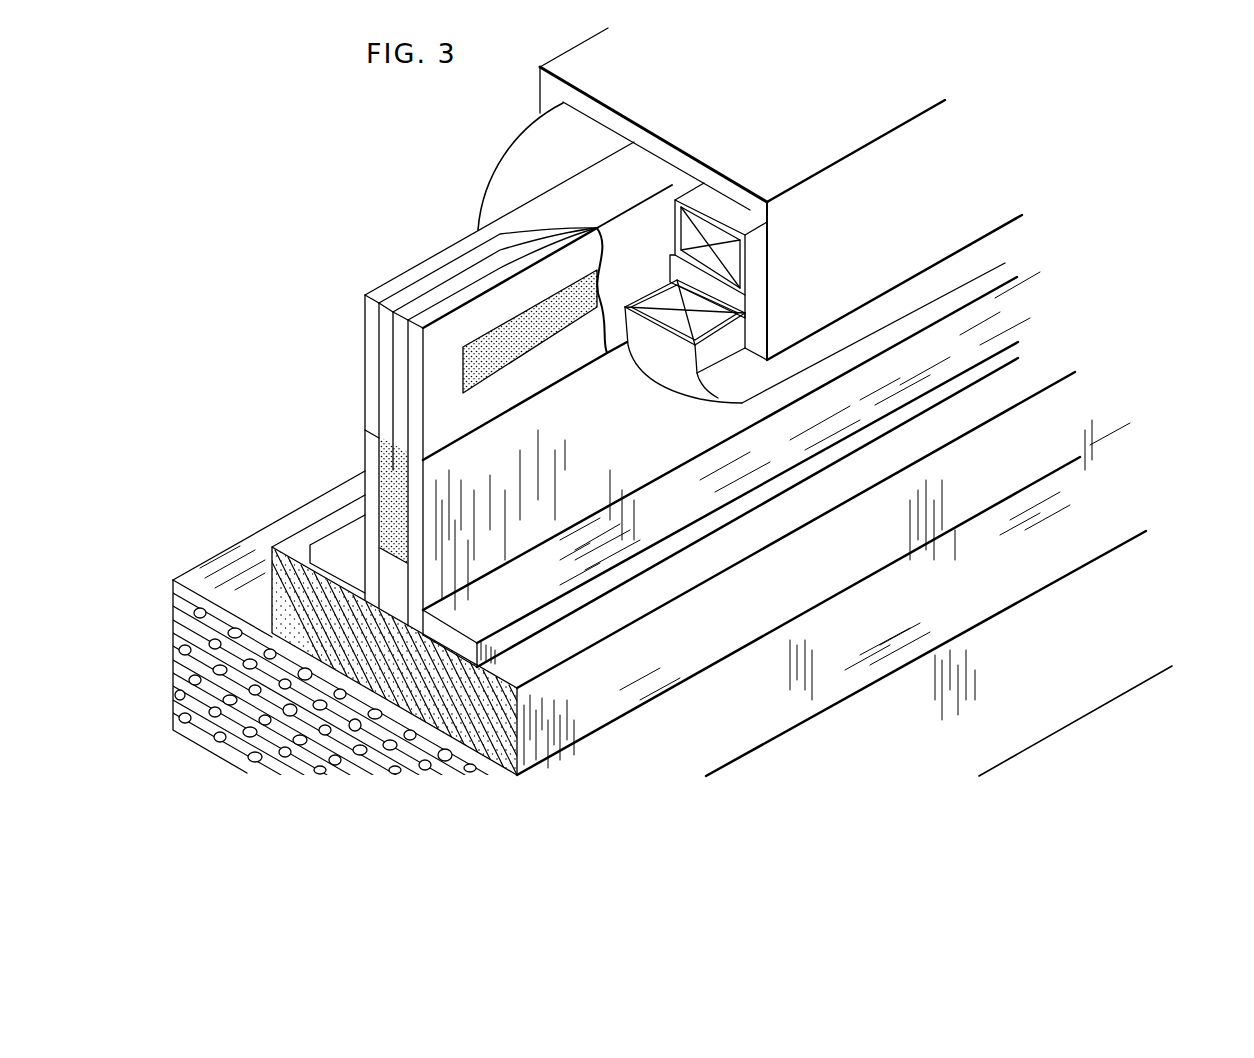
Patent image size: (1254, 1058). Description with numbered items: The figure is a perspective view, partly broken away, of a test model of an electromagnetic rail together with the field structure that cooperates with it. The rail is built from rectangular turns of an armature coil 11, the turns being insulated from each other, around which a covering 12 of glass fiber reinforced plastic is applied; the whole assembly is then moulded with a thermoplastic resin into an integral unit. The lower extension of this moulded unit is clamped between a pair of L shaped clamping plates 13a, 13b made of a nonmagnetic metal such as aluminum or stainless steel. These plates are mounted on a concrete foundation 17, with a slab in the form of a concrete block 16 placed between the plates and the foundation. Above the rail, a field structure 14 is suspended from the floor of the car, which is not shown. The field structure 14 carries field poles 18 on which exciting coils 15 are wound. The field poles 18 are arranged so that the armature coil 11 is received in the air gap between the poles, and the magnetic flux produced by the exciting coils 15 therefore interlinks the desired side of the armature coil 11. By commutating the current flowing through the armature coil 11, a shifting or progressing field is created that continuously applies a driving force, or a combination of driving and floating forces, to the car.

The armature coil 11 is at (482, 408).
The covering 12 is at (518, 214).
The L shaped clamping plate 13a is at (372, 466).
The L shaped clamping plate 13b is at (412, 512).
The field structure 14 is at (675, 147).
The exciting coil 15 is at (700, 375).
The concrete block 16 is at (270, 568).
The concrete foundation 17 is at (173, 653).
The field pole 18 is at (748, 294).